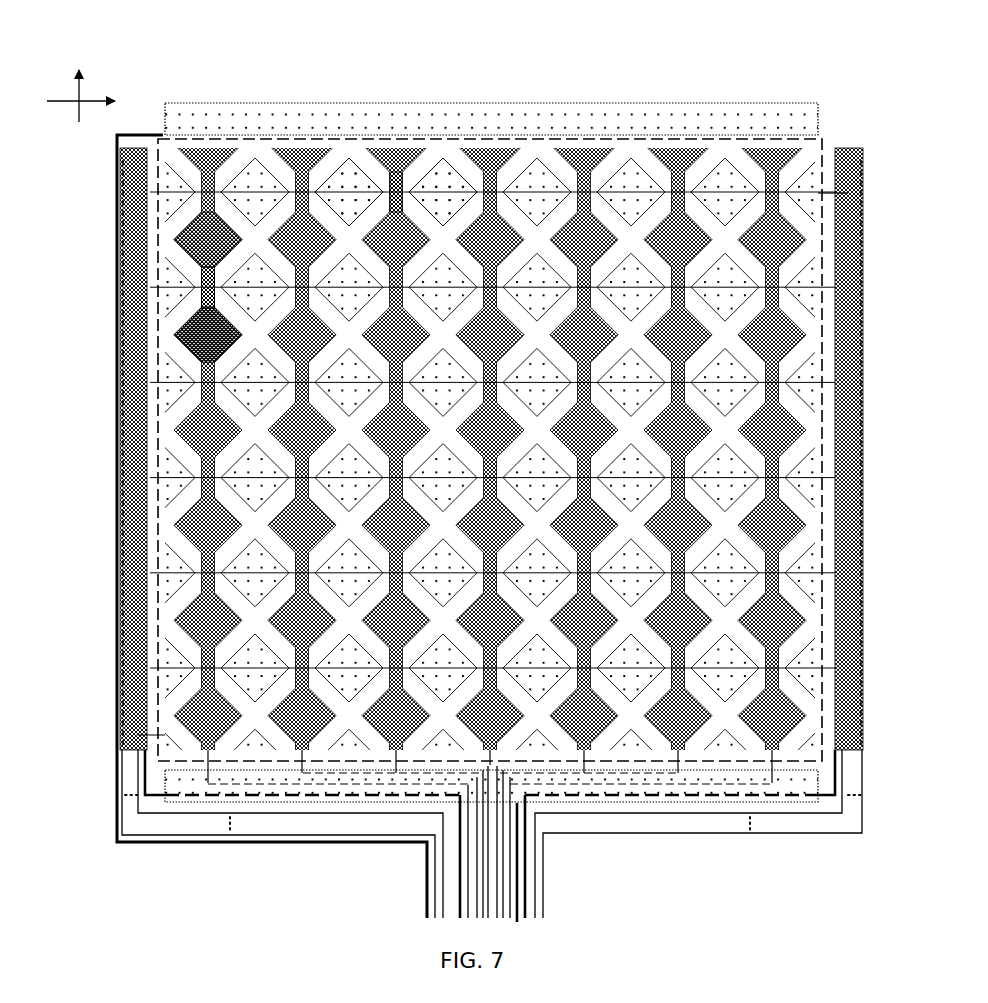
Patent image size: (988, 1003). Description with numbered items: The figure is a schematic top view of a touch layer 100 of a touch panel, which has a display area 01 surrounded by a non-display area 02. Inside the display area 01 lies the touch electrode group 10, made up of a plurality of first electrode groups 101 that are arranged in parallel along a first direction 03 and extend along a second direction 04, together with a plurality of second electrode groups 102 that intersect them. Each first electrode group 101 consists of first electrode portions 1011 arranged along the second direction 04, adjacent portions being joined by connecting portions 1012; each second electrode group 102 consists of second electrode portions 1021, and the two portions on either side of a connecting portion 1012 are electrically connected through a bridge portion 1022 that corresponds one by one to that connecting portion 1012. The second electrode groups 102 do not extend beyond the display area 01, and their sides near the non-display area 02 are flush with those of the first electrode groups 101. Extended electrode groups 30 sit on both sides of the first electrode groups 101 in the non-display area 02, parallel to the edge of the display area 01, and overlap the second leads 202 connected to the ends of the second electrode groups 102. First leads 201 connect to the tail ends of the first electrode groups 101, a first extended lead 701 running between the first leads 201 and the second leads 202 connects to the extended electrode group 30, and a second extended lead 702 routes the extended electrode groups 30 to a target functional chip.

The touch layer 100 is at (132, 71).
The first direction 03 is at (71, 103).
The second direction 04 is at (79, 105).
The touch electrode group 10 is at (325, 68).
The first electrode group 101 is at (301, 148).
The first electrode portion 1011 is at (205, 245).
The connecting portion 1012 is at (208, 290).
The second electrode group 102 is at (257, 160).
The second electrode portion 1021 is at (356, 187).
The bridge portion 1022 is at (398, 190).
The display area 01 is at (814, 153).
The non-display area 02 is at (824, 108).
The extended electrode group 30 is at (133, 162).
The second lead 202 is at (851, 194).
The first lead 201 is at (226, 785).
The first extended lead 701 is at (152, 797).
The second extended lead 702 is at (378, 843).